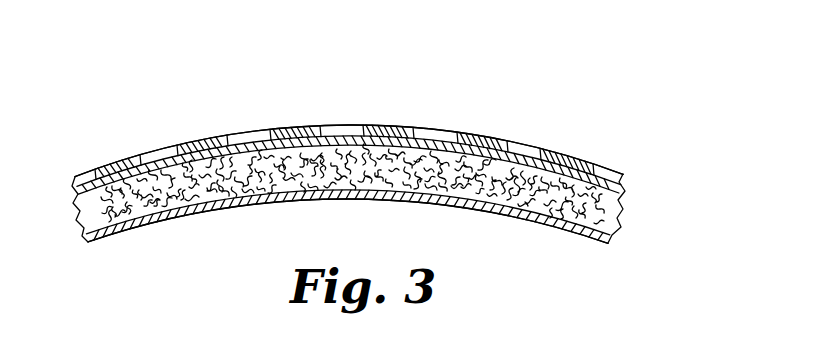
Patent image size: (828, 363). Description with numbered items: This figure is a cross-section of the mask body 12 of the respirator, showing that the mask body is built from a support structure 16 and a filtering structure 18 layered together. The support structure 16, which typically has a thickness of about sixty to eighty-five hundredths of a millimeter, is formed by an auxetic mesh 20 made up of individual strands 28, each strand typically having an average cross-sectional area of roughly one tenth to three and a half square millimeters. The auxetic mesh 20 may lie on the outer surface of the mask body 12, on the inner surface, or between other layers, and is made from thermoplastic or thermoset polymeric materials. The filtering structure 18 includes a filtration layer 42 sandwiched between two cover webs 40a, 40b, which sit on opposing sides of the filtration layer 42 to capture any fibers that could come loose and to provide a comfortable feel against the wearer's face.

The mask body 12 is at (603, 62).
The support structure 16 is at (527, 147).
The filtering structure 18 is at (627, 190).
The auxetic mesh 20 is at (426, 135).
The strand 28 is at (295, 132).
The cover web 40a is at (122, 229).
The cover web 40b is at (158, 168).
The filtration layer 42 is at (83, 217).